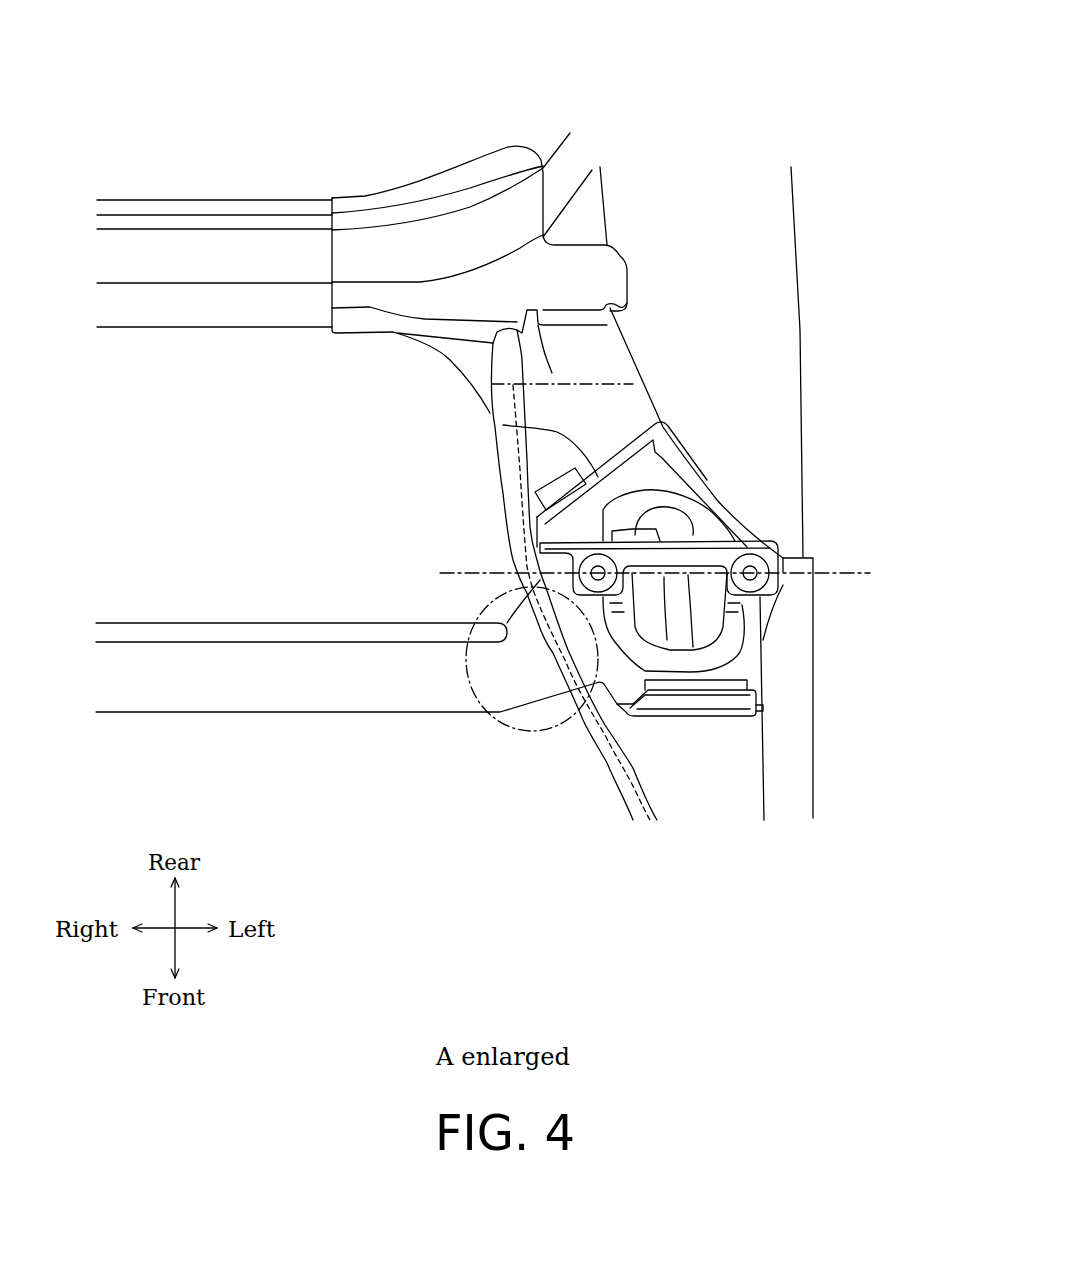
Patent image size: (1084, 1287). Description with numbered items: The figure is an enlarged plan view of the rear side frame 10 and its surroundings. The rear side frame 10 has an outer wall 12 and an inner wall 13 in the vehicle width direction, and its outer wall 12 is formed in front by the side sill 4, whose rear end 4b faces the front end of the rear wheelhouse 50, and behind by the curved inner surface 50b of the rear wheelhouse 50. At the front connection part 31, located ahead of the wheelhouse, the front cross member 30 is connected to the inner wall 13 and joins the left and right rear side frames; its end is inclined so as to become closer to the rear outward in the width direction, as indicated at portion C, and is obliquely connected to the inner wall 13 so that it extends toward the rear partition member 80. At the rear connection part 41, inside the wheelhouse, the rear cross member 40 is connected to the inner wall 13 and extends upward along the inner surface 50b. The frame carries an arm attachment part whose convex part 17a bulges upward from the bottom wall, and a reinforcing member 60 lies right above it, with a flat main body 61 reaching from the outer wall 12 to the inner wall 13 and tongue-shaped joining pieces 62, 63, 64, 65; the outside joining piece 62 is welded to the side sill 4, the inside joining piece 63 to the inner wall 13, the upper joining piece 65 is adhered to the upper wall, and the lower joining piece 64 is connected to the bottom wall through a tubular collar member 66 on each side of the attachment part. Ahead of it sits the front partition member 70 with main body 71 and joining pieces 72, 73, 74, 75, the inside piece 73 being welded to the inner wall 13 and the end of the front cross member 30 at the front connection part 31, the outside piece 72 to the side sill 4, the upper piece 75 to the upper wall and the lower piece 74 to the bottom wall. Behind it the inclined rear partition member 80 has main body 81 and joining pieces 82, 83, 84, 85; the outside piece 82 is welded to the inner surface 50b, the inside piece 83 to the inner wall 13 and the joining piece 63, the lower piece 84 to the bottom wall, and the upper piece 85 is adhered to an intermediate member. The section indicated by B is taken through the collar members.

The side sill 4 is at (813, 567).
The rear end of the side sill 4b is at (803, 555).
The rear side frame 10 is at (583, 392).
The outer wall 12 is at (760, 805).
The inner wall 13 is at (653, 777).
The convex part 17a is at (677, 637).
The front cross member 30 is at (273, 673).
The front connection part 31 is at (537, 667).
The rear cross member 40 is at (237, 245).
The rear connection part 41 is at (508, 225).
The rear wheelhouse 50 is at (748, 205).
The inner surface of the rear wheelhouse 50b is at (680, 408).
The reinforcing member 60 is at (717, 530).
The main body of the reinforcing member 61 is at (747, 543).
The outside joining piece of the reinforcing member 62 is at (787, 585).
The inside joining piece of the reinforcing member 63 is at (537, 542).
The lower joining piece of the reinforcing member 64 is at (728, 682).
The upper joining piece of the reinforcing member 65 is at (700, 540).
The collar member 66 is at (580, 568).
The front partition member 70 is at (738, 753).
The main body of the front partition member 71 is at (733, 700).
The outside joining piece of the front partition member 72 is at (738, 727).
The inside joining piece of the front partition member 73 is at (590, 717).
The lower joining piece of the front partition member 74 is at (707, 706).
The upper joining piece of the front partition member 75 is at (757, 705).
The rear partition member 80 is at (600, 460).
The main body of the rear partition member 81 is at (623, 447).
The outside joining piece of the rear partition member 82 is at (678, 462).
The inside joining piece of the rear partition member 83 is at (537, 527).
The lower joining piece of the rear partition member 84 is at (503, 425).
The upper joining piece of the rear partition member 85 is at (557, 482).
The section line B- B is at (452, 578).
The portion C is at (473, 690).